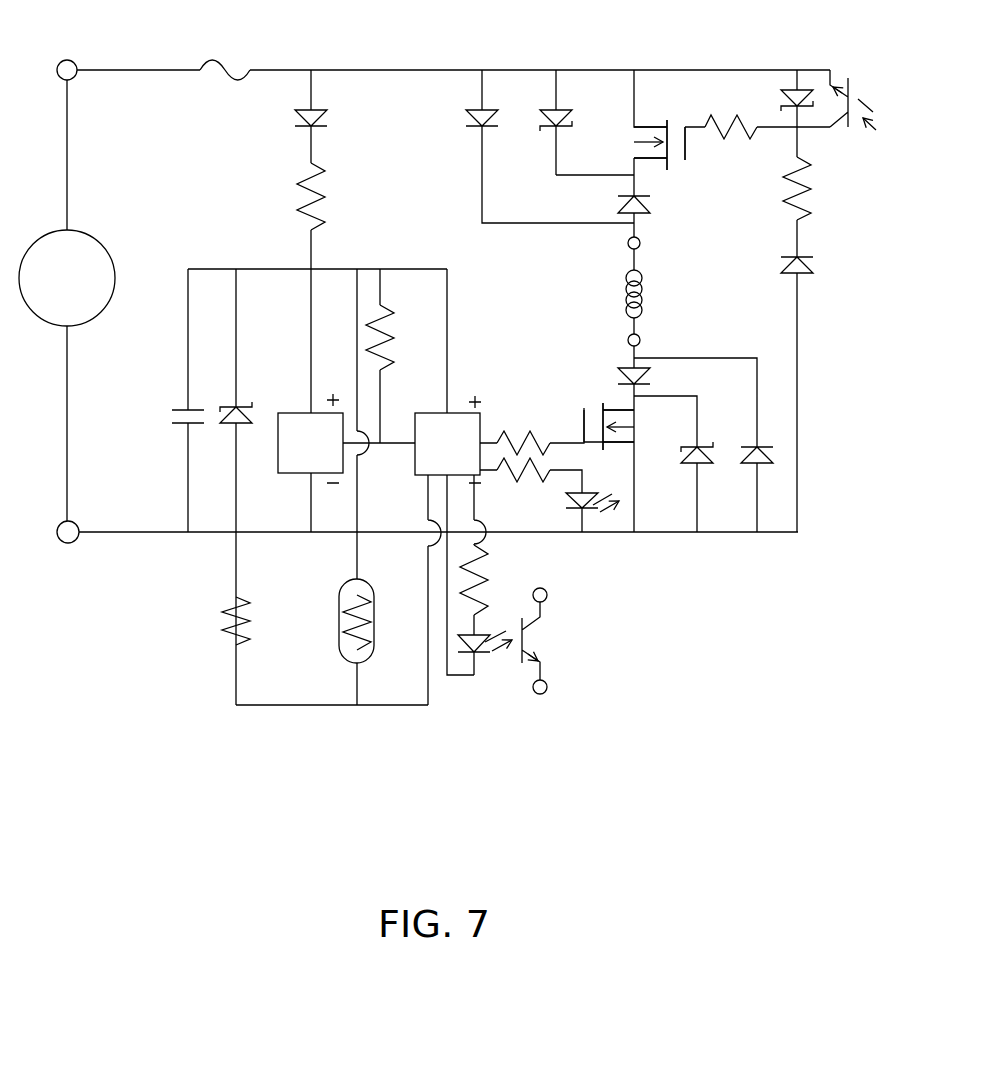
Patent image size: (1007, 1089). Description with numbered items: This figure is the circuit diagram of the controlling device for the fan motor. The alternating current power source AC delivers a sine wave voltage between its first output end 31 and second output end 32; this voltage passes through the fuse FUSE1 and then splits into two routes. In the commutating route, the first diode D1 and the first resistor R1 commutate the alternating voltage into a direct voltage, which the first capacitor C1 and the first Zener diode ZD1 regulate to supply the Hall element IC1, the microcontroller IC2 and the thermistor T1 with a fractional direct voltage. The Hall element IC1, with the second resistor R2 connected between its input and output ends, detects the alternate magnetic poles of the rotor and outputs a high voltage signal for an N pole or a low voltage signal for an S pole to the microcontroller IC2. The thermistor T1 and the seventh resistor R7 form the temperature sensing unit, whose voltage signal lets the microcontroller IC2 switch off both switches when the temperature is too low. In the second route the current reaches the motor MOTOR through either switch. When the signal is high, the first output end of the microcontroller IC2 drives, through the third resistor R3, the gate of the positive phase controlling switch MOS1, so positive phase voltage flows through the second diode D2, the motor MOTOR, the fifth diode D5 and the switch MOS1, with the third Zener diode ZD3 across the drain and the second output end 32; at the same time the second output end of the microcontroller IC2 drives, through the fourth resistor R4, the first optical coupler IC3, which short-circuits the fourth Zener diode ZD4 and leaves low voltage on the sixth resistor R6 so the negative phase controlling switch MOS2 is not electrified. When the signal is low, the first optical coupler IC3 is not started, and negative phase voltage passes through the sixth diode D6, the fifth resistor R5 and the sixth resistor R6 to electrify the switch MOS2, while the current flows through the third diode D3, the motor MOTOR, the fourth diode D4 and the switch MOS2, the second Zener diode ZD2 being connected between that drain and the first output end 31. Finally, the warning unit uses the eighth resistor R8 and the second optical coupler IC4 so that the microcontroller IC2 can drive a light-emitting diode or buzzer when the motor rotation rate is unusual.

The first output end 31 is at (66, 60).
The second output end 32 is at (66, 543).
The alternating current power source AC is at (67, 278).
The fuse FUSE1 is at (207, 87).
The first diode D1 is at (331, 122).
The first resistor R1 is at (333, 196).
The first capacitor C1 is at (172, 421).
The first Zener diode ZD1 is at (256, 401).
The Hall element IC1 is at (310, 438).
The second resistor R2 is at (402, 337).
The microcontroller IC2 is at (457, 439).
The third resistor R3 is at (523, 428).
The fourth resistor R4 is at (558, 486).
The second diode D2 is at (467, 106).
The second Zener diode ZD2 is at (576, 108).
The negative phase controlling switch MOS2 is at (667, 131).
The fourth diode D4 is at (654, 210).
The fourth Zener diode ZD4 is at (768, 96).
The sixth resistor R6 is at (731, 142).
The first optical coupler IC3 is at (867, 96).
The fifth resistor R5 is at (821, 188).
The sixth diode D6 is at (821, 265).
The motor MOTOR is at (677, 291).
The fifth diode D5 is at (656, 381).
The positive phase controlling switch MOS1 is at (597, 415).
The third Zener diode ZD3 is at (677, 468).
The third diode D3 is at (768, 471).
The seventh resistor R7 is at (258, 621).
The thermistor T1 is at (362, 621).
The eighth resistor R8 is at (493, 598).
The second optical coupler IC4 is at (563, 641).